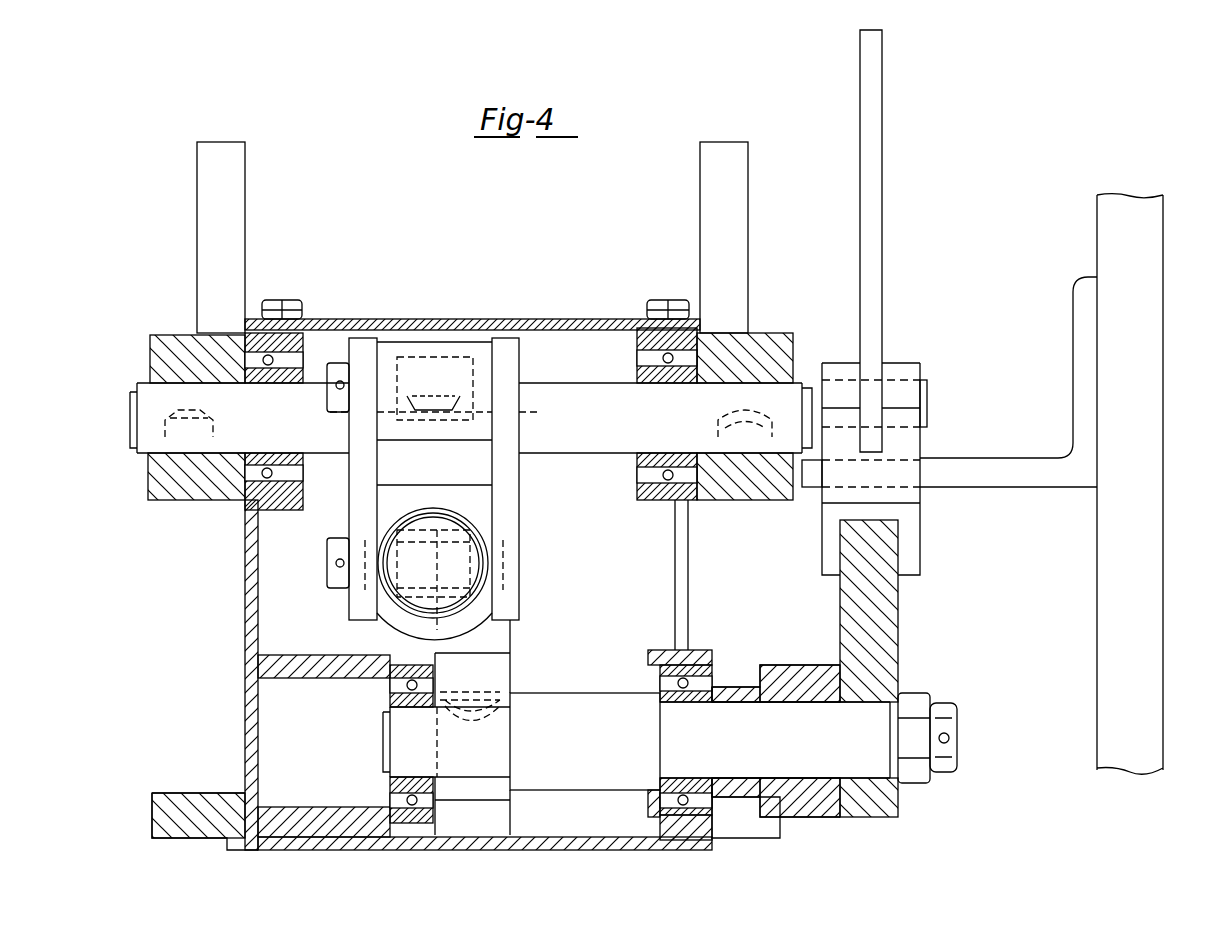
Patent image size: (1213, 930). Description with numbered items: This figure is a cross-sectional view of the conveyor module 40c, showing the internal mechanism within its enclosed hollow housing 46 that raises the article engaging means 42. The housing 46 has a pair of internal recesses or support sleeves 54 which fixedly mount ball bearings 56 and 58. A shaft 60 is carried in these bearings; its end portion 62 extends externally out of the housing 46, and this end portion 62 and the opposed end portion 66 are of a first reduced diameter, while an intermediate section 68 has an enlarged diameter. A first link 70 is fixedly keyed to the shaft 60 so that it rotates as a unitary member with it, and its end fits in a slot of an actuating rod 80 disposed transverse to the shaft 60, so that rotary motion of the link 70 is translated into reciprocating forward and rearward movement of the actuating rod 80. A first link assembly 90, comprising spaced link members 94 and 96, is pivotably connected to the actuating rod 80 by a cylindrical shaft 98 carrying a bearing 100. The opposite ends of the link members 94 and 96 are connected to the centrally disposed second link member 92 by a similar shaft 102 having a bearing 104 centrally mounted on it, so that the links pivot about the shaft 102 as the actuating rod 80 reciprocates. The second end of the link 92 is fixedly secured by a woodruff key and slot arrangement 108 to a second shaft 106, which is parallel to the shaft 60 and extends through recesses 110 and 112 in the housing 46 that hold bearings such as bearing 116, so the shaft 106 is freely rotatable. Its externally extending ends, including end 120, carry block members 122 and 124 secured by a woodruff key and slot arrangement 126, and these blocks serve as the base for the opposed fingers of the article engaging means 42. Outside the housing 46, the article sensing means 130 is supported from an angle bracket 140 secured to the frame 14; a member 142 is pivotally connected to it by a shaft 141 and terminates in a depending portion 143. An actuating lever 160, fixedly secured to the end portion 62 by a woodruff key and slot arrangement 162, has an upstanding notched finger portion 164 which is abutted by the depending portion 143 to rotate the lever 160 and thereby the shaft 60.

The frame 14 is at (1163, 478).
The module 40c is at (500, 196).
The article engaging means 42 is at (197, 222).
The housing 46 is at (545, 318).
The support sleeves 54 is at (345, 678).
The ball bearing 56 is at (660, 803).
The ball bearing 58 is at (390, 800).
The shaft 60 is at (578, 672).
The end portion 62 is at (915, 773).
The end portion 66 is at (390, 745).
The intermediate section 68 is at (510, 790).
The first link 70 is at (510, 640).
The actuating rod 80 is at (470, 520).
The first link assembly 90 is at (505, 512).
The second link member 92 is at (415, 450).
The first link member 94 is at (469, 580).
The second link member 96 is at (348, 538).
The cylindrical shaft 98 is at (348, 595).
The bearing 100 is at (382, 638).
The shaft 102 is at (338, 378).
The bearing 104 is at (448, 355).
The second shaft 106 is at (775, 380).
The woodruff key and slot arrangement 108 is at (425, 400).
The recess 110 is at (640, 353).
The recess 112 is at (250, 355).
The bearing 116 is at (248, 472).
The end 120 is at (145, 398).
The block member 122 is at (805, 310).
The block member 124 is at (168, 495).
The woodruff key and slot arrangement 126 is at (715, 425).
The article sensing means 130 is at (935, 236).
The angle bracket 140 is at (1068, 443).
The shaft 141 is at (928, 404).
The member 142 is at (830, 498).
The depending portion 143 is at (918, 546).
The actuating lever 160 is at (905, 628).
The woodruff key and slot arrangement 162 is at (840, 700).
The finger portion 164 is at (840, 562).